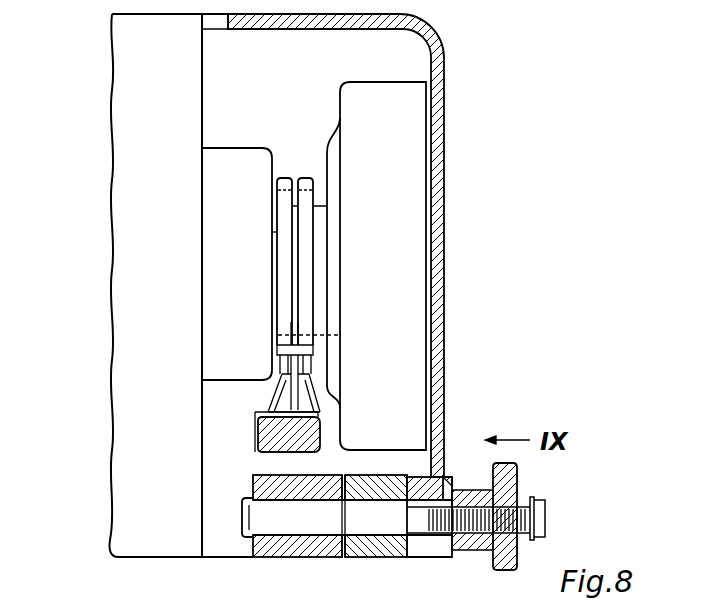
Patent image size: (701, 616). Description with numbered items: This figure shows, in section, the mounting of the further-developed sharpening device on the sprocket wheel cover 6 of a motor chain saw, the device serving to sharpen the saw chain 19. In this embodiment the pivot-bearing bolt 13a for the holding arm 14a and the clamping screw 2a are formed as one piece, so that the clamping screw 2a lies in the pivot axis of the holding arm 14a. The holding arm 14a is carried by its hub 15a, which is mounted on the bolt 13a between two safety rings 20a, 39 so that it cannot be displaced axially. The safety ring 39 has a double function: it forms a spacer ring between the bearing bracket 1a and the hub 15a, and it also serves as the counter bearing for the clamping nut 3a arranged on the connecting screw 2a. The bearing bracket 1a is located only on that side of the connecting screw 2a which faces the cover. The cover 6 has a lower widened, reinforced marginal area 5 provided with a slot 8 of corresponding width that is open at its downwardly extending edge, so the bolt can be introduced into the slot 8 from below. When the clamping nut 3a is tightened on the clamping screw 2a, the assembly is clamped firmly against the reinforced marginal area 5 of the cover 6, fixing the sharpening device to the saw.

The sprocket wheel cover 6 is at (437, 283).
The widened marginal area 5 is at (440, 492).
The saw chain 19 is at (283, 390).
The holding arm 14a is at (254, 455).
The safety ring 20a is at (251, 540).
The hub 15a is at (272, 553).
The pivot-bearing bolt 13a is at (318, 528).
The safety ring 39 is at (345, 536).
The bearing bracket 1a is at (379, 555).
The clamping screw 2a is at (417, 522).
The slot 8 is at (445, 543).
The clamping nut 3a is at (507, 555).